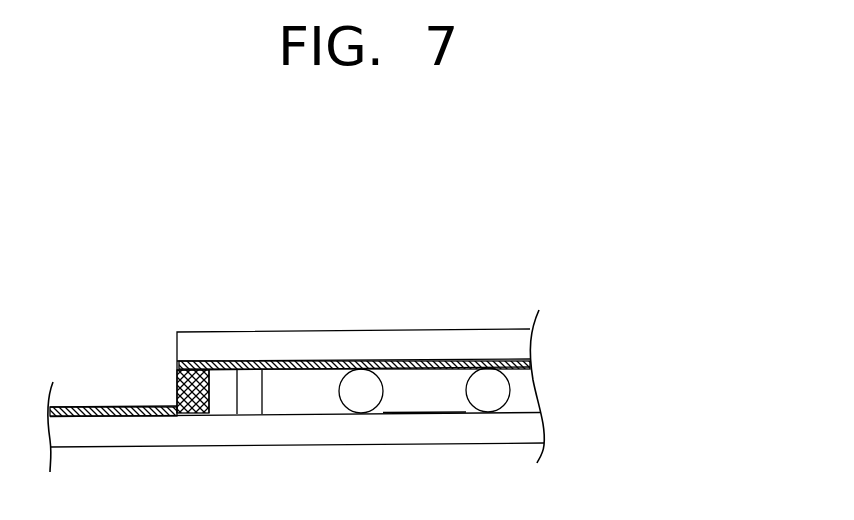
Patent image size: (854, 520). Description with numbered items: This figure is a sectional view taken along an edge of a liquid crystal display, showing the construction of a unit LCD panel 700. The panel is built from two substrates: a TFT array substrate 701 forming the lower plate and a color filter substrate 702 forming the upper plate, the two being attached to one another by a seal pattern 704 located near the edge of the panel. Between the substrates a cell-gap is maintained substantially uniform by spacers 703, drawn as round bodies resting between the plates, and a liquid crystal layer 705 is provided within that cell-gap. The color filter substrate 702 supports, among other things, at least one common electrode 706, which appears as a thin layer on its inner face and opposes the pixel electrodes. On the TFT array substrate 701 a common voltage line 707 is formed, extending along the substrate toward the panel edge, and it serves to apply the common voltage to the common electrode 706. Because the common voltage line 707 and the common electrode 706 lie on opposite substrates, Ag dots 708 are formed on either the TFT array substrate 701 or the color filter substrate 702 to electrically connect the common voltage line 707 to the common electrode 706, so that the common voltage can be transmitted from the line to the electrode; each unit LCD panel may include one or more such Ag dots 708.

The unit LCD panel 700 is at (511, 234).
The TFT array substrate 701 is at (442, 427).
The color filter substrate 702 is at (249, 338).
The spacers 703 is at (489, 397).
The seal pattern 704 is at (250, 398).
The liquid crystal layer 705 is at (401, 398).
The common electrode 706 is at (177, 364).
The common voltage line 707 is at (73, 406).
The Ag dots 708 is at (177, 388).